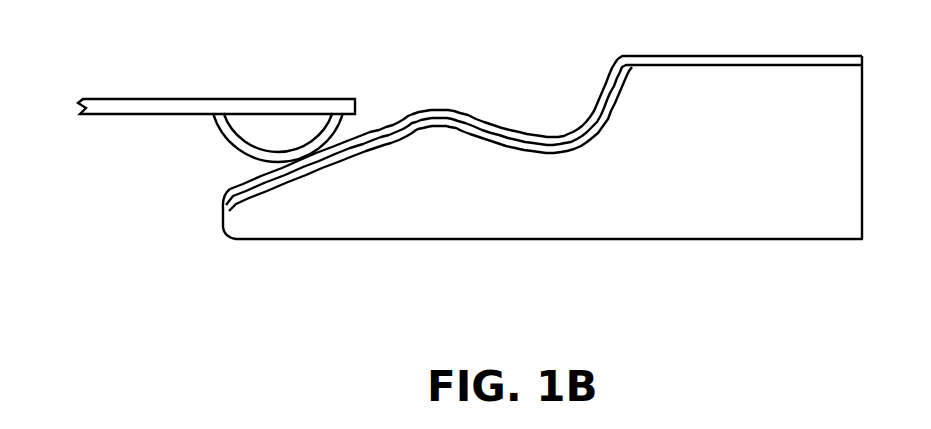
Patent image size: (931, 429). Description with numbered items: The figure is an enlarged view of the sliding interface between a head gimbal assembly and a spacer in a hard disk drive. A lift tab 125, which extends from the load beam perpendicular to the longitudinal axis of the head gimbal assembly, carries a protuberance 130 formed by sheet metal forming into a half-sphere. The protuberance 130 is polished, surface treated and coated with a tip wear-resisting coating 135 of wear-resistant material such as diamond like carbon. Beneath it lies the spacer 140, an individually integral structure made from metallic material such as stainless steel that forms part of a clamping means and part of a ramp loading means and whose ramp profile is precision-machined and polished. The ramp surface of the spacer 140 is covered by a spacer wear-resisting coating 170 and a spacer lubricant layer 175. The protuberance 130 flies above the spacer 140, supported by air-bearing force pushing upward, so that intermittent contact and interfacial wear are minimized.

The lift tab 125 is at (88, 88).
The protuberance 130 is at (271, 117).
The wear-resisting coating 135 is at (205, 137).
The spacer 140 is at (743, 223).
The wear-resisting coating 170 is at (457, 136).
The lubricant layer 175 is at (450, 100).